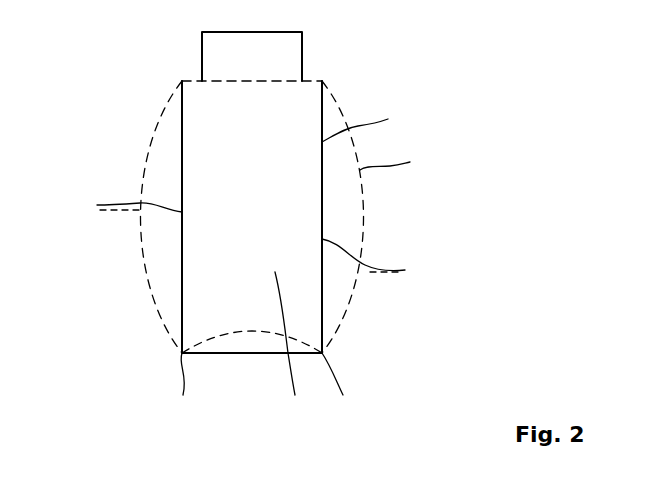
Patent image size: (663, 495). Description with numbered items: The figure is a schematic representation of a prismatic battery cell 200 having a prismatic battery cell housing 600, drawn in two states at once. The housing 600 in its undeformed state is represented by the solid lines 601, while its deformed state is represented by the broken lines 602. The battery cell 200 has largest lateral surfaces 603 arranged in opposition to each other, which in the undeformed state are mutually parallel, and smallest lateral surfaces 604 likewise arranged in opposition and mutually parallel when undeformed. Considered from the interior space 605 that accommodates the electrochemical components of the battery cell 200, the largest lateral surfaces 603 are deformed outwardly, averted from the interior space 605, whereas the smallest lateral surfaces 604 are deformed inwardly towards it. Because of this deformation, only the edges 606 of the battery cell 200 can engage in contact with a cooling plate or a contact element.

The battery cell 200 is at (196, 307).
The battery cell housing 600 is at (322, 212).
The solid lines 601 is at (377, 117).
The broken lines 602 is at (408, 154).
The largest lateral surfaces 603 is at (256, 237).
The smallest lateral surfaces 604 is at (200, 81).
The interior space 605 is at (300, 347).
The edges 606 is at (270, 388).